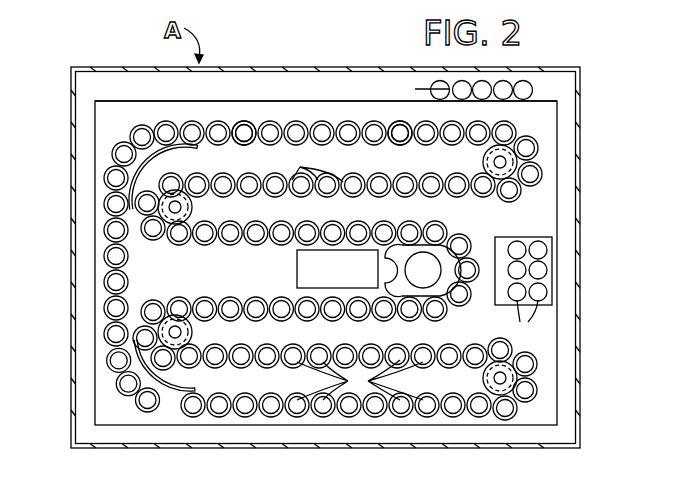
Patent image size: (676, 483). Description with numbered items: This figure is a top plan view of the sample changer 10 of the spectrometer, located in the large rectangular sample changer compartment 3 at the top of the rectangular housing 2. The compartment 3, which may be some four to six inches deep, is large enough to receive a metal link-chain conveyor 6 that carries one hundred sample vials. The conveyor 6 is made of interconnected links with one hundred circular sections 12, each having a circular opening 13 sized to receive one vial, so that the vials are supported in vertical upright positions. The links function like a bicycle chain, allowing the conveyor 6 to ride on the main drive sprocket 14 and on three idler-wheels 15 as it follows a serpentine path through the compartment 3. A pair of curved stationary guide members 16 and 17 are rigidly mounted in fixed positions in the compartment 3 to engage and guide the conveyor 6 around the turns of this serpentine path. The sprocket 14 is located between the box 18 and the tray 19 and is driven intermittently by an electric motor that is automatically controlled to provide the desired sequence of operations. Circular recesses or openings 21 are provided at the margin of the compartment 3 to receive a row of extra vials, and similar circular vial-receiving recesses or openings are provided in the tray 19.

The housing 2 is at (66, 258).
The sample changer compartment 3 is at (140, 118).
The link-chain conveyor 6 is at (137, 271).
The sample changer 10 is at (546, 136).
The circular sections 12 is at (323, 249).
The circular opening 13 is at (260, 124).
The main drive sprocket 14 is at (443, 250).
The idler-wheels 15 is at (483, 162).
The curved stationary guide member 16 is at (190, 151).
The curved stationary guide member 17 is at (200, 390).
The box 18 is at (297, 270).
The tray 19 is at (543, 237).
The circular recesses or openings 21 is at (497, 94).